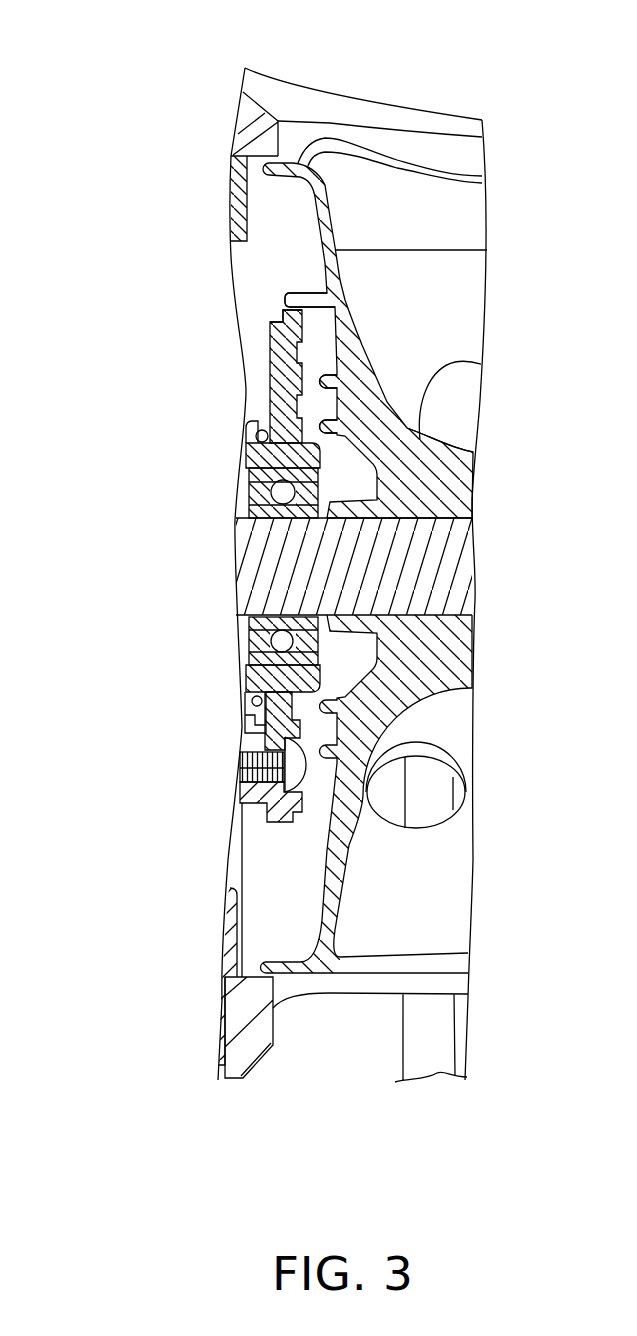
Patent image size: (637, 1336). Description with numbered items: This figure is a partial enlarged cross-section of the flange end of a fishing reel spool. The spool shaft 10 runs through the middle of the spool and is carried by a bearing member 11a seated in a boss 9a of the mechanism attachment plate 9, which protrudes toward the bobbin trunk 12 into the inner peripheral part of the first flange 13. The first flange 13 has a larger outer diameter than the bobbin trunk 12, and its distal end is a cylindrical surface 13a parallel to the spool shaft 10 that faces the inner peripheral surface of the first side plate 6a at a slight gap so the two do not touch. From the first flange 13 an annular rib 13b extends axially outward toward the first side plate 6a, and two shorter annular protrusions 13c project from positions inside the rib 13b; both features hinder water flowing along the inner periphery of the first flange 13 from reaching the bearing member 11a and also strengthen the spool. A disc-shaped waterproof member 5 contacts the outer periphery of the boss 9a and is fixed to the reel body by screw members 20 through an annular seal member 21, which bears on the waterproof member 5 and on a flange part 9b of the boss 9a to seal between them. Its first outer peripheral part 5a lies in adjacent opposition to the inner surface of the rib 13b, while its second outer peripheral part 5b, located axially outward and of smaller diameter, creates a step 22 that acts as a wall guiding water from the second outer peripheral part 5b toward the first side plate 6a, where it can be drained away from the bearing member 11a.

The waterproof member 5 is at (277, 380).
The first outer peripheral part 5a is at (289, 292).
The second outer peripheral part 5b is at (282, 310).
The first side plate 6a is at (243, 101).
The mechanism attachment plate 9 is at (235, 203).
The boss 9a is at (257, 452).
The flange part 9b is at (250, 430).
The spool shaft 10 is at (448, 562).
The bearing member 11a is at (263, 503).
The bobbin trunk 12 is at (468, 452).
The first flange 13 is at (330, 217).
The cylindrical surface 13a is at (272, 156).
The rib 13b is at (338, 250).
The protrusion 13c is at (323, 427).
The screw member 20 is at (297, 767).
The seal member 21 is at (258, 438).
The step 22 is at (278, 308).